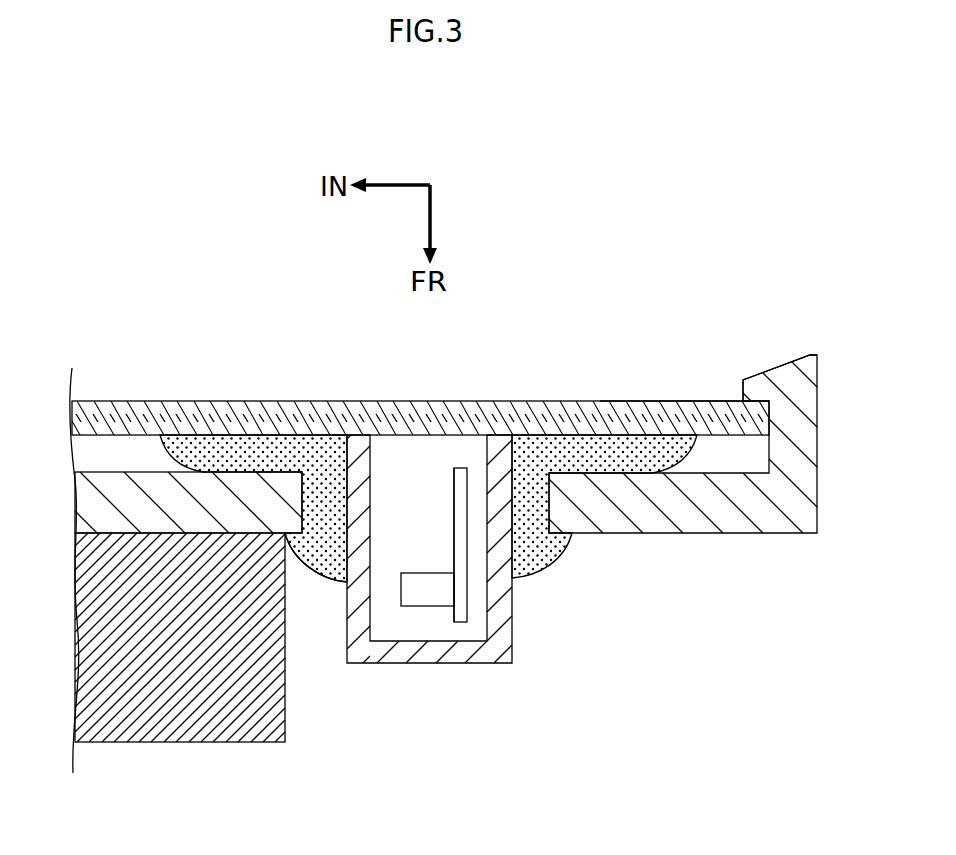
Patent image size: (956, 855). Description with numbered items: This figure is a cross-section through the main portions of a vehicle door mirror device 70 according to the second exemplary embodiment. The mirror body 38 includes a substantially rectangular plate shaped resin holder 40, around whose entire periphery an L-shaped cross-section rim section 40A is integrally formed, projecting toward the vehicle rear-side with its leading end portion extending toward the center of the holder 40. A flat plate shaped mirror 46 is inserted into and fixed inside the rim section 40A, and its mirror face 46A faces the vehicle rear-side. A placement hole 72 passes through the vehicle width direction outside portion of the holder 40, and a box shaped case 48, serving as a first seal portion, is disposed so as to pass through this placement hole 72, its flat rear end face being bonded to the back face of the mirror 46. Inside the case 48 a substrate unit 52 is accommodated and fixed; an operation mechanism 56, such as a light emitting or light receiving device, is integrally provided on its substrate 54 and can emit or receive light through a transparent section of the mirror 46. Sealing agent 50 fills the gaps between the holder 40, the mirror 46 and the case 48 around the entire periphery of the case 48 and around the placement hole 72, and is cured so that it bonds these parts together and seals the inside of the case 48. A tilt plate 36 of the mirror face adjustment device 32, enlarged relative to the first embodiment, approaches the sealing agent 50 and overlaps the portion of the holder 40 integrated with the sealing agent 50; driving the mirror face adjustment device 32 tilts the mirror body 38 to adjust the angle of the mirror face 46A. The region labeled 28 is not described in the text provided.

The vehicle door mirror device 70 is at (164, 260).
The mirror body 38 is at (255, 368).
The mirror 46 is at (350, 401).
The mirror face 46A is at (640, 401).
The holder 40 is at (739, 534).
The rim section 40A is at (770, 369).
The sealing agent 50 is at (541, 568).
The case 48 is at (512, 634).
The substrate unit 52 is at (450, 483).
The substrate 54 is at (453, 522).
The operation mechanism 56 is at (401, 595).
The placement hole 72 is at (313, 564).
The space 28 is at (458, 762).
The tilt plate 36 is at (180, 673).
The mirror face adjustment device 32 is at (190, 742).